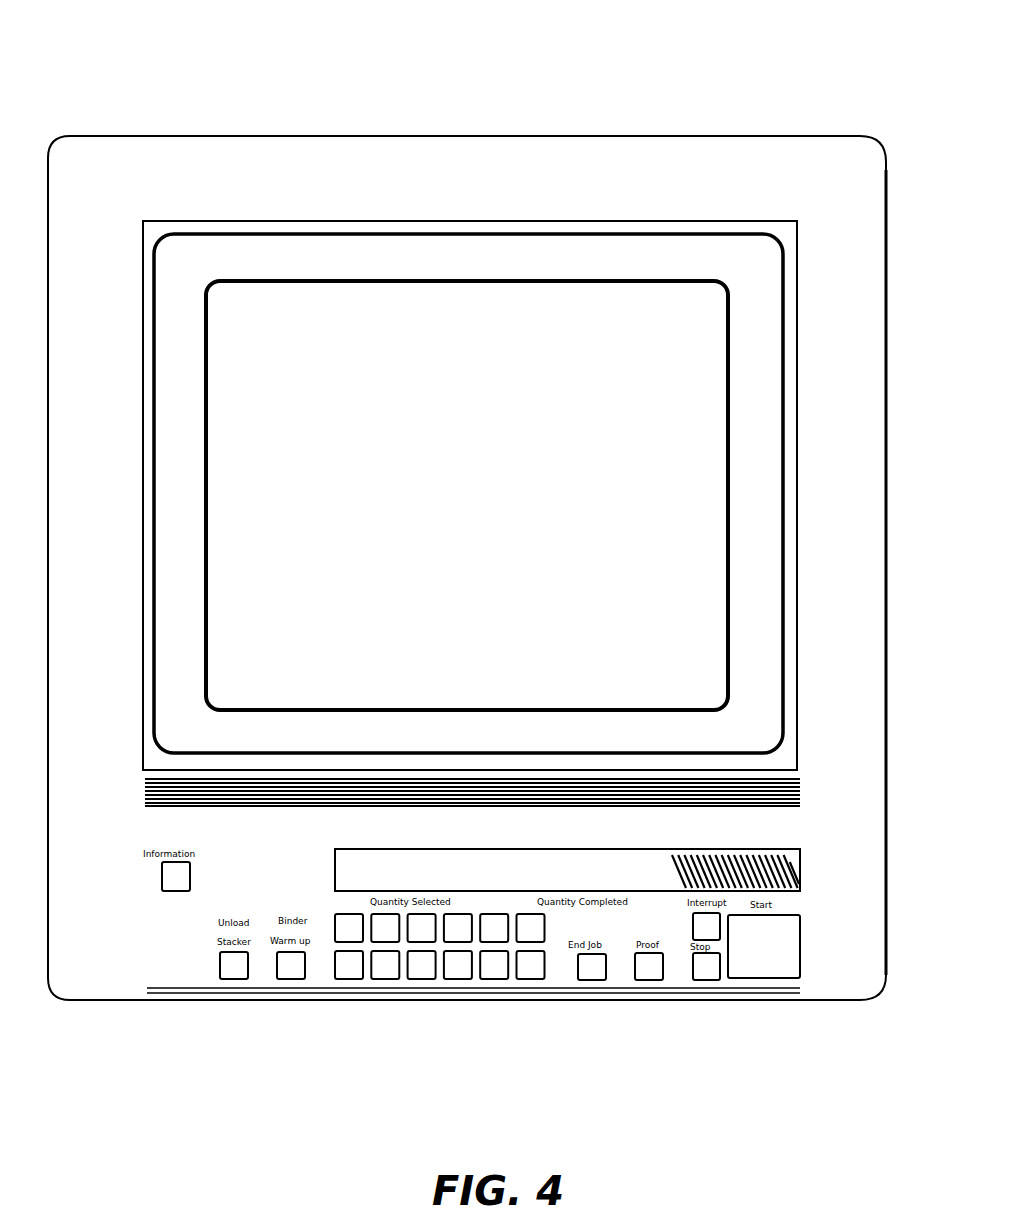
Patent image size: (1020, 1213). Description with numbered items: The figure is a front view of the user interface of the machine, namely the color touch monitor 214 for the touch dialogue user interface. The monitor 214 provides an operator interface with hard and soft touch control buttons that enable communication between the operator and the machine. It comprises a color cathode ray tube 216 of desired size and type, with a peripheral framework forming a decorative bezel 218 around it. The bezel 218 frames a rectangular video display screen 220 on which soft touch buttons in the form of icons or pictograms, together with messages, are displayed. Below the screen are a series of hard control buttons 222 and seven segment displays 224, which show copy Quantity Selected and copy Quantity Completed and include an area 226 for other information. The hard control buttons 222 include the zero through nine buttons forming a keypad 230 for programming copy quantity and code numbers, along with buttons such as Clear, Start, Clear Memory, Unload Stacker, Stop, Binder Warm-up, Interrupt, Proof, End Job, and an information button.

The color touch monitor 214 is at (490, 103).
The color cathode ray tube 216 is at (614, 298).
The decorative bezel 218 is at (855, 208).
The video display screen 220 is at (686, 296).
The hard control buttons 222 is at (398, 940).
The seven segment displays 224 is at (467, 852).
The area for other information 226 is at (800, 878).
The keypad 230 is at (543, 997).